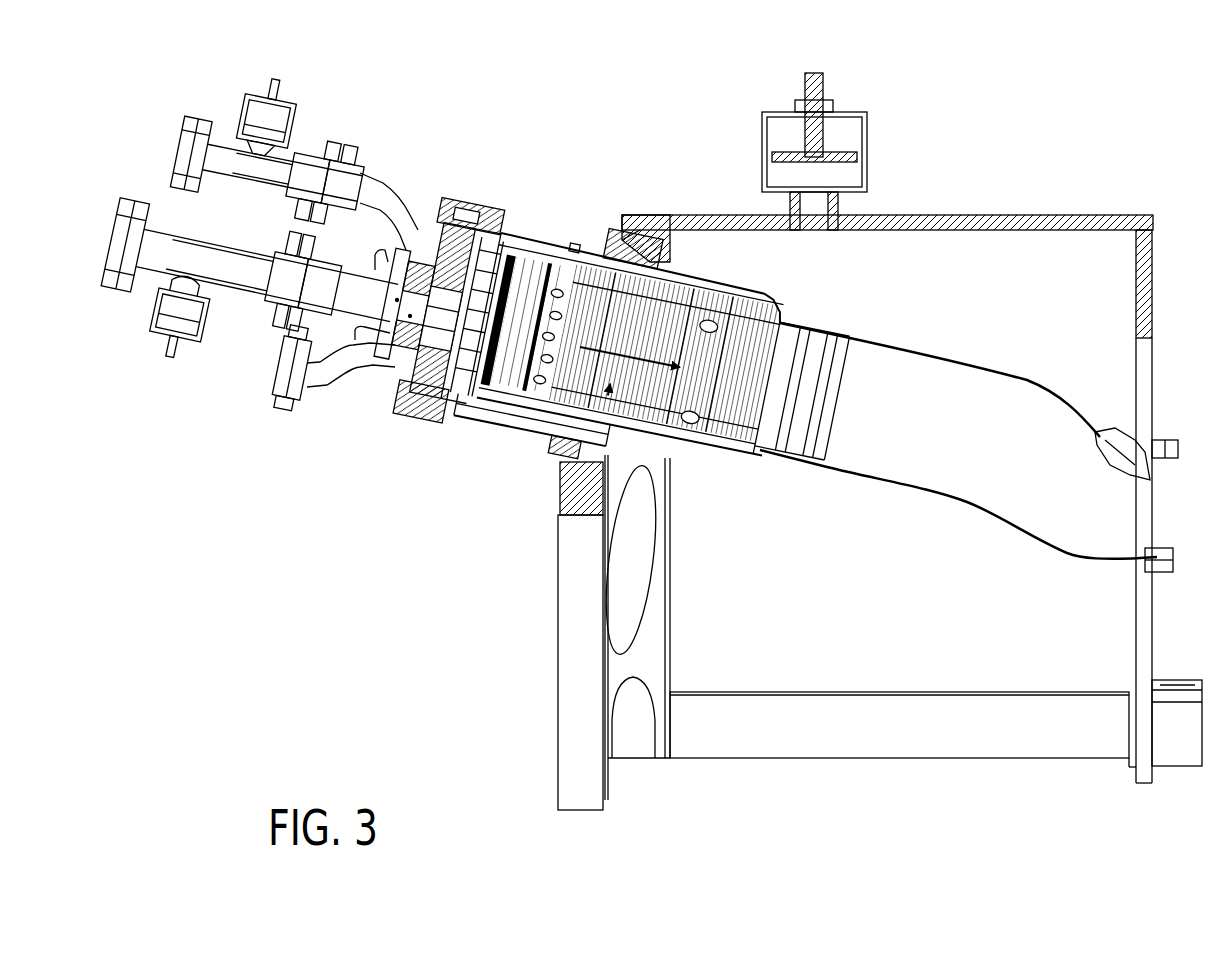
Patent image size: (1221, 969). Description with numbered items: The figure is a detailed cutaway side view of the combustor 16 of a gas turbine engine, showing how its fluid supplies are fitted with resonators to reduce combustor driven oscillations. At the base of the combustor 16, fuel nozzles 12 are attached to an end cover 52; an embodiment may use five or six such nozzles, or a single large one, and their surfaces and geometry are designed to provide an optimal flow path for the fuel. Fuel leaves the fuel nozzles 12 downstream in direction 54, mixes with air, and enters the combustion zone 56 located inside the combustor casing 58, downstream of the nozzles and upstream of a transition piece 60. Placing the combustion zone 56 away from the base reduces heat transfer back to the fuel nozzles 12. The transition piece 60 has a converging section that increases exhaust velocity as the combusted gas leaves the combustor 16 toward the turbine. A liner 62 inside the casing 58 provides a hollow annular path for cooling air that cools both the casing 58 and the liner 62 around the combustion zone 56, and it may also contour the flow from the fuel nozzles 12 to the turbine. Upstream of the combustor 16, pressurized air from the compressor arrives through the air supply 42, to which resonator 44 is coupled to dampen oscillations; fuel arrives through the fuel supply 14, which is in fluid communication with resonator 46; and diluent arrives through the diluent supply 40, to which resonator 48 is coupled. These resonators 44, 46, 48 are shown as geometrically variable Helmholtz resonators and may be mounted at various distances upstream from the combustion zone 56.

The fuel nozzles 12 is at (410, 316).
The fuel supply 14 is at (125, 213).
The combustor 16 is at (997, 153).
The diluent supply 40 is at (185, 138).
The air supply 42 is at (1017, 242).
The resonator 44 is at (850, 133).
The resonator 46 is at (200, 335).
The resonator 48 is at (288, 100).
The end cover 52 is at (403, 415).
The direction 54 is at (650, 325).
The combustion zone 56 is at (580, 440).
The combustor casing 58 is at (692, 450).
The transition piece 60 is at (917, 463).
The liner 62 is at (576, 268).